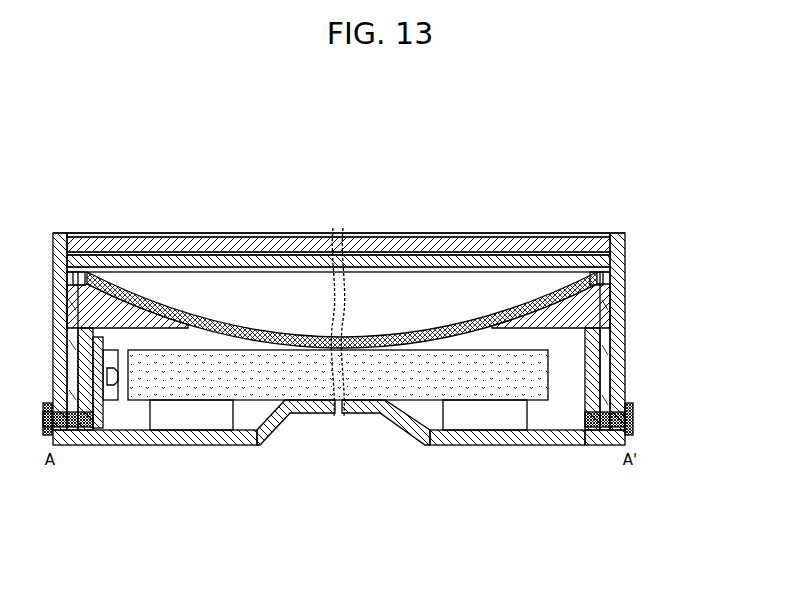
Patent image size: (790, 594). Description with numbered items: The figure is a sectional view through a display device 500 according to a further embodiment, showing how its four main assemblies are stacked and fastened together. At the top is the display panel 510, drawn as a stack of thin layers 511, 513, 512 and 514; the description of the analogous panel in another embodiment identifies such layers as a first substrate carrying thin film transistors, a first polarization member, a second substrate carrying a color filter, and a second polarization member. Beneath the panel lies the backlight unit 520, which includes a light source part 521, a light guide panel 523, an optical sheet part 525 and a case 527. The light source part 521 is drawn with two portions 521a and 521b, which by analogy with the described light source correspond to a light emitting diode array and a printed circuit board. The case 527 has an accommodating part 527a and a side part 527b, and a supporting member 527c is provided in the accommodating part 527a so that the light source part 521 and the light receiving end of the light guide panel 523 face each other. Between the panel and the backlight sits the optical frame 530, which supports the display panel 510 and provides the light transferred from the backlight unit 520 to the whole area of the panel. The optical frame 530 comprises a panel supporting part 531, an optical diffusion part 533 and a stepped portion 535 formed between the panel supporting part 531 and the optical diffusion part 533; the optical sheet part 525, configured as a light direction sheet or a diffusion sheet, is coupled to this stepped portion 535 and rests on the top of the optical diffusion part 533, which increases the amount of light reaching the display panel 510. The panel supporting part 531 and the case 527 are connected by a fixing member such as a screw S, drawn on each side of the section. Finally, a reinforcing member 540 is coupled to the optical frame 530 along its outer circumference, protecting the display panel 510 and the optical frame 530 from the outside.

The display device 500 is at (62, 165).
The display panel 510 is at (402, 178).
The first layer 511 is at (405, 233).
The third layer 513 is at (440, 237).
The second layer 512 is at (468, 255).
The fourth layer 514 is at (508, 267).
The optical sheet part 525 is at (253, 325).
The optical frame 530 is at (676, 279).
The stepped portion 535 is at (612, 280).
The optical diffusion part 533 is at (593, 308).
The panel supporting part 531 is at (620, 348).
The reinforcing member 540 is at (612, 370).
The backlight unit 520 is at (597, 543).
The light source part 521 is at (70, 503).
The connector 521a is at (120, 400).
The side wall block 521b is at (100, 430).
The light guide panel 523 is at (378, 385).
The case 527 is at (630, 504).
The accommodating part 527a is at (557, 440).
The side part 527b is at (590, 437).
The supporting member 527c is at (508, 417).
The screw S is at (636, 418).